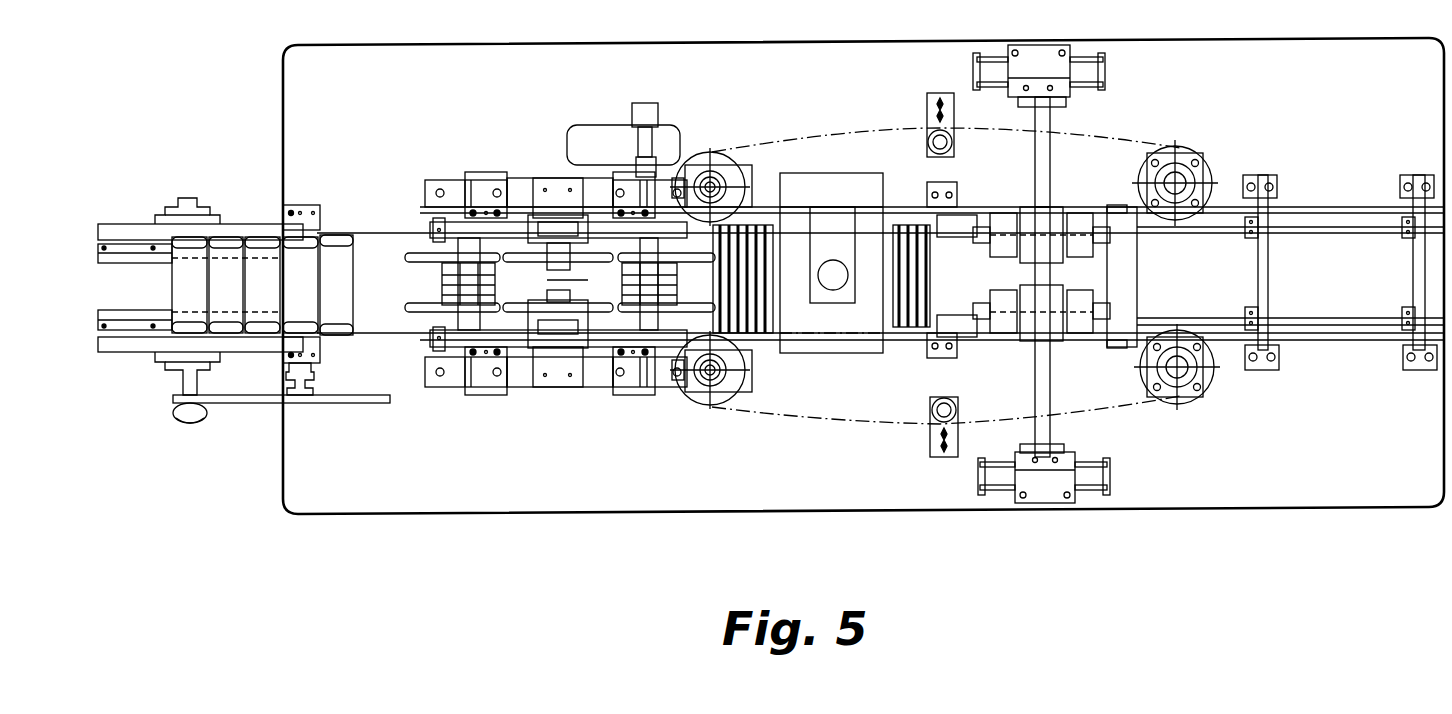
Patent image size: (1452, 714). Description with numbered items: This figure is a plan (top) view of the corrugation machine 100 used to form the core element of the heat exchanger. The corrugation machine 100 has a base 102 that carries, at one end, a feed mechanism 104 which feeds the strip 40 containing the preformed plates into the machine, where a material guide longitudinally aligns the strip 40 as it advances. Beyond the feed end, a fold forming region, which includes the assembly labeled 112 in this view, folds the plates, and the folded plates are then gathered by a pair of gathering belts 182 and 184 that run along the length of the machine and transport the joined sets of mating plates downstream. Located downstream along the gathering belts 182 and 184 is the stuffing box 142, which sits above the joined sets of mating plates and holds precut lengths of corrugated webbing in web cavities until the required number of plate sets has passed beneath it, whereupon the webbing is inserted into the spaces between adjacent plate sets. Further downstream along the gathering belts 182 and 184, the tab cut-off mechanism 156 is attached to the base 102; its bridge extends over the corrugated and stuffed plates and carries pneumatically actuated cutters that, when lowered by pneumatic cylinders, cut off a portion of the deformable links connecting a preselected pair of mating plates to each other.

The strip 40 is at (340, 230).
The corrugation machine 100 is at (378, 337).
The base 102 is at (1355, 482).
The feed mechanism 104 is at (132, 242).
The guide assembly 112 is at (520, 152).
The stuffing box 142 is at (867, 303).
The tab cut-off mechanism 156 is at (1045, 125).
The gathering belt 182 is at (800, 135).
The gathering belt 184 is at (836, 420).